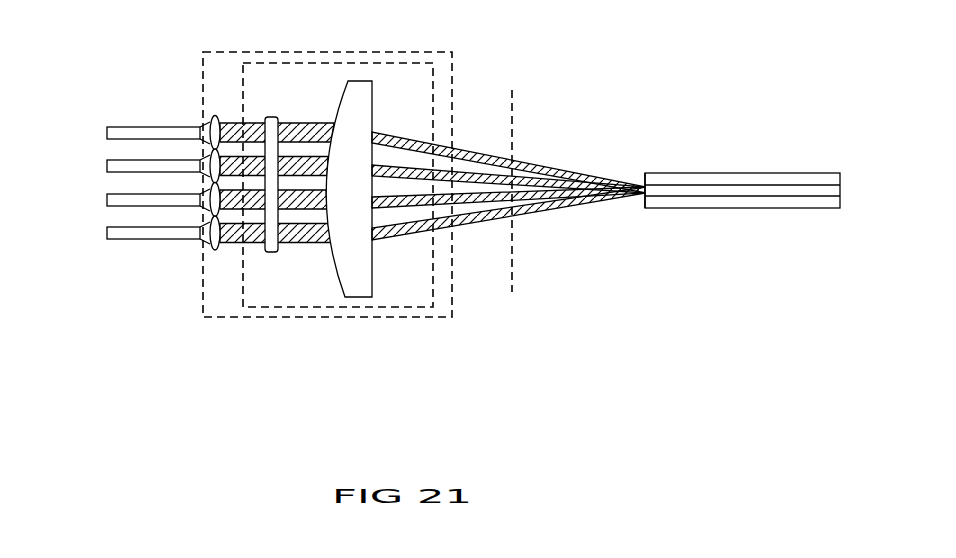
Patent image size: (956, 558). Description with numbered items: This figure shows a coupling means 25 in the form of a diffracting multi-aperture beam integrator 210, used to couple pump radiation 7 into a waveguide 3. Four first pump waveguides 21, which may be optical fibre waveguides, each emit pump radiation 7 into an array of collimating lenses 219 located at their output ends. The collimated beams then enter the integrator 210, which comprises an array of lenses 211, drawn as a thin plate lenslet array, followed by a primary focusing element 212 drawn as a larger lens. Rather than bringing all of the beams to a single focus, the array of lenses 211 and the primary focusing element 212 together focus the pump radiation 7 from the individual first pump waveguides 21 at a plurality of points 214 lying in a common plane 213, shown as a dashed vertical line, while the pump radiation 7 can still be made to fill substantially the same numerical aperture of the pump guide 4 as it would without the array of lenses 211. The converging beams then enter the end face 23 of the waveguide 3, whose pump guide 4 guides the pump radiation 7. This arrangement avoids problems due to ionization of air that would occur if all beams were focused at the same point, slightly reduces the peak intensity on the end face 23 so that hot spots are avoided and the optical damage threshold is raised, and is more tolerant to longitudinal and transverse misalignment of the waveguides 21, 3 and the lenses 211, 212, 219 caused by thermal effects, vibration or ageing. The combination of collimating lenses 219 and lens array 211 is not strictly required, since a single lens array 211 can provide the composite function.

The first pump waveguides 21 is at (107, 128).
The collimating lenses 219 is at (219, 122).
The pump radiation 7 is at (293, 125).
The array of lenses 211 is at (275, 252).
The primary focusing element 212 is at (358, 297).
The common plane 213 is at (512, 268).
The points 214 is at (512, 163).
The end face 23 is at (645, 177).
The waveguide 3 is at (743, 208).
The pump guide 4 is at (790, 187).
The coupling means 25 is at (230, 52).
The diffracting multi-aperture beam integrator 210 is at (407, 63).